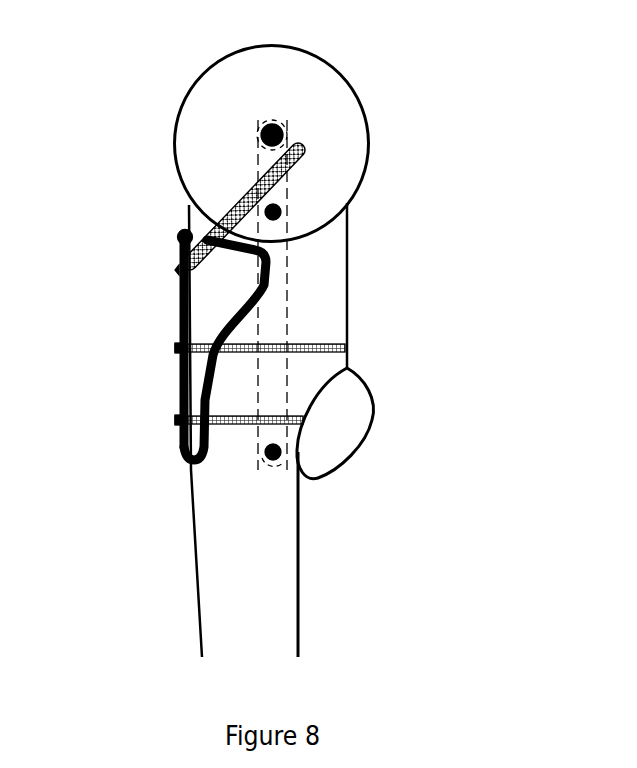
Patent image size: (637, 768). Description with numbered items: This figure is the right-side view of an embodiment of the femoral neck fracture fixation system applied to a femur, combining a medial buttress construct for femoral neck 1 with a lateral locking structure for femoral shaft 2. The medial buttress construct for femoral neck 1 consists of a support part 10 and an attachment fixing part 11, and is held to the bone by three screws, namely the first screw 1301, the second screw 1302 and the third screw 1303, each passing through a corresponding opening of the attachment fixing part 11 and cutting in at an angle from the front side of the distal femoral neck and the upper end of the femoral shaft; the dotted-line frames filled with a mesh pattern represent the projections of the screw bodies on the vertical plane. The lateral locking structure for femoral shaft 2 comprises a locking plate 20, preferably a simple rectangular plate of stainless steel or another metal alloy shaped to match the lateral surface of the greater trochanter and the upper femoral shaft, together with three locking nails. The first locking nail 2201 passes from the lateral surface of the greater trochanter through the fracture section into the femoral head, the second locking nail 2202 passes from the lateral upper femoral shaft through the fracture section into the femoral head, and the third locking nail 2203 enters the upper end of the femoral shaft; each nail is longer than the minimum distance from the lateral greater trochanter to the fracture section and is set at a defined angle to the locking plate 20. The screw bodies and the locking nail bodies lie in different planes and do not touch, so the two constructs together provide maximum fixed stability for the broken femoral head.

The medial buttress construct for femoral neck 1 is at (271, 319).
The lateral locking structure for femoral shaft 2 is at (333, 334).
The support part 10 is at (241, 352).
The attachment fixing part 11 is at (197, 383).
The locking plate 20 is at (268, 318).
The first screw 1301 is at (243, 208).
The second screw 1302 is at (322, 352).
The third screw 1303 is at (302, 420).
The first locking nail 2201 is at (285, 135).
The second locking nail 2202 is at (283, 210).
The third locking nail 2203 is at (283, 462).